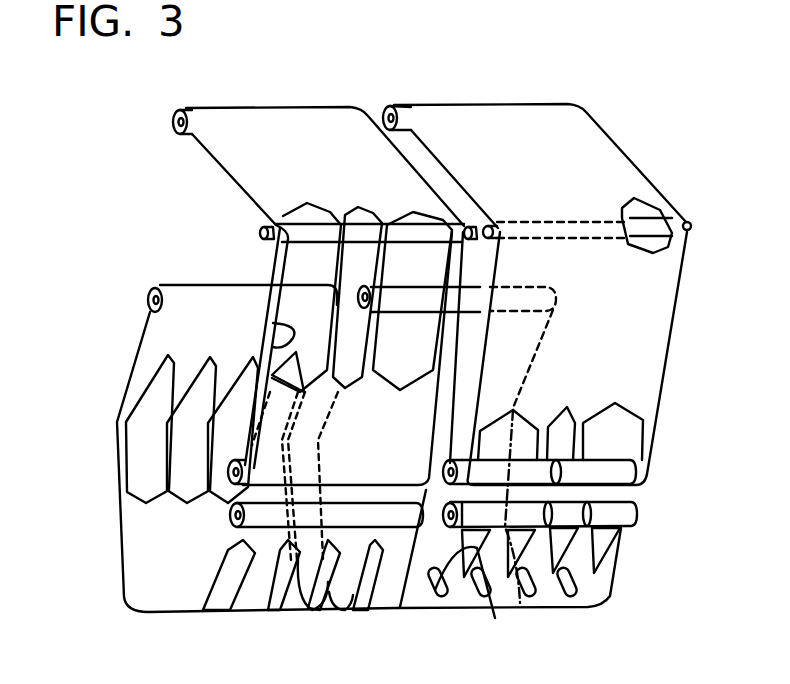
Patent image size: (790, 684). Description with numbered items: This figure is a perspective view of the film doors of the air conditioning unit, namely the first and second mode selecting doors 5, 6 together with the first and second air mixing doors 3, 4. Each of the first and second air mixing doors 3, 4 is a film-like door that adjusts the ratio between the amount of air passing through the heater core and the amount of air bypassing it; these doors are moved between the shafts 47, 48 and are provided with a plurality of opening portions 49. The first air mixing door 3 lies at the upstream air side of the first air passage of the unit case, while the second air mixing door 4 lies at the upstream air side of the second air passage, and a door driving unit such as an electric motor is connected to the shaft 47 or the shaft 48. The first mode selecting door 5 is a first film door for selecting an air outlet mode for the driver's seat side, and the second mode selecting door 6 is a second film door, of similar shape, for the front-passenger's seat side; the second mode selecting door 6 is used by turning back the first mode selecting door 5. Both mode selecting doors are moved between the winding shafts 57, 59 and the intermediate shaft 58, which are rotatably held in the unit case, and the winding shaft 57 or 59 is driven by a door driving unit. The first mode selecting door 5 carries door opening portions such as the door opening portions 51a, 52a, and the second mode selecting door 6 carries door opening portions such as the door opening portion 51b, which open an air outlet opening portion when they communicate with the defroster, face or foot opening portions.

The first air mixing door 3 is at (613, 592).
The second air mixing door 4 is at (128, 606).
The first mode selecting door 5 is at (612, 142).
The second mode selecting door 6 is at (237, 178).
The shaft 47 is at (232, 520).
The shaft 48 is at (148, 298).
The opening portions 49 is at (140, 473).
The door opening portion 51a is at (642, 450).
The door opening portion 51b is at (273, 323).
The door opening portion 52a is at (645, 205).
The winding shaft 57 is at (230, 482).
The intermediate shaft 58 is at (259, 230).
The winding shaft 59 is at (176, 116).